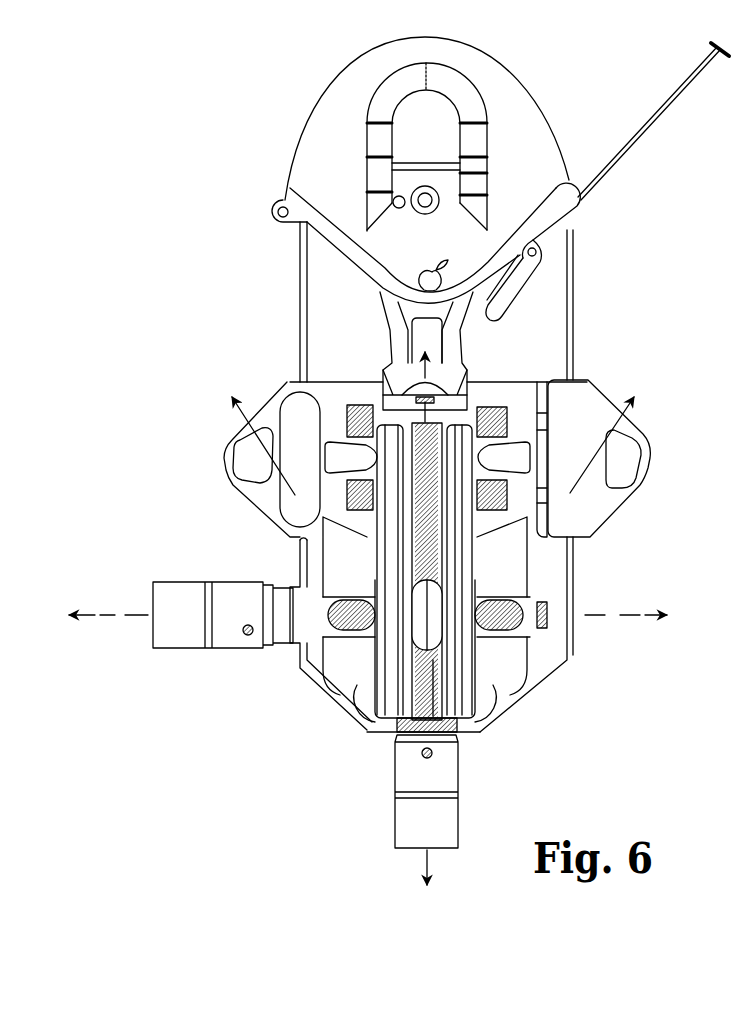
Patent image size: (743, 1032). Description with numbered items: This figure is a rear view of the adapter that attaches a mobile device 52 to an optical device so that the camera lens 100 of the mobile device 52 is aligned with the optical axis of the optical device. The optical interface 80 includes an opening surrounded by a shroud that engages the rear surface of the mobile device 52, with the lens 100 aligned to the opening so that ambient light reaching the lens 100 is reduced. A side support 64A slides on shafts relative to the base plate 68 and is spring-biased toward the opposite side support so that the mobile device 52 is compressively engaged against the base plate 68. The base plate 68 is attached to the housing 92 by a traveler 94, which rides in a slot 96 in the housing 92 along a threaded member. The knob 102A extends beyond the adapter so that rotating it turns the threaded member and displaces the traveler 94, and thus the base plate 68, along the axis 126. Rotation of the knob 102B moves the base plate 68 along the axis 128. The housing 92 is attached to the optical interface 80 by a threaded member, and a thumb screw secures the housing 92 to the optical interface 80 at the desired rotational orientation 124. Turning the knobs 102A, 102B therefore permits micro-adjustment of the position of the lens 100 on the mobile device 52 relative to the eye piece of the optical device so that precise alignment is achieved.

The mobile device 52 is at (330, 330).
The side support 64A is at (580, 397).
The base plate 68 is at (537, 563).
The optical interface 80 is at (313, 172).
The housing 92 is at (383, 724).
The traveler 94 is at (433, 623).
The slot 96 is at (440, 703).
The camera lens 100 is at (394, 209).
The knob 102A is at (445, 828).
The knob 102B is at (190, 633).
The rotational orientation 124 is at (242, 427).
The axis 126 is at (427, 866).
The axis 128 is at (130, 615).